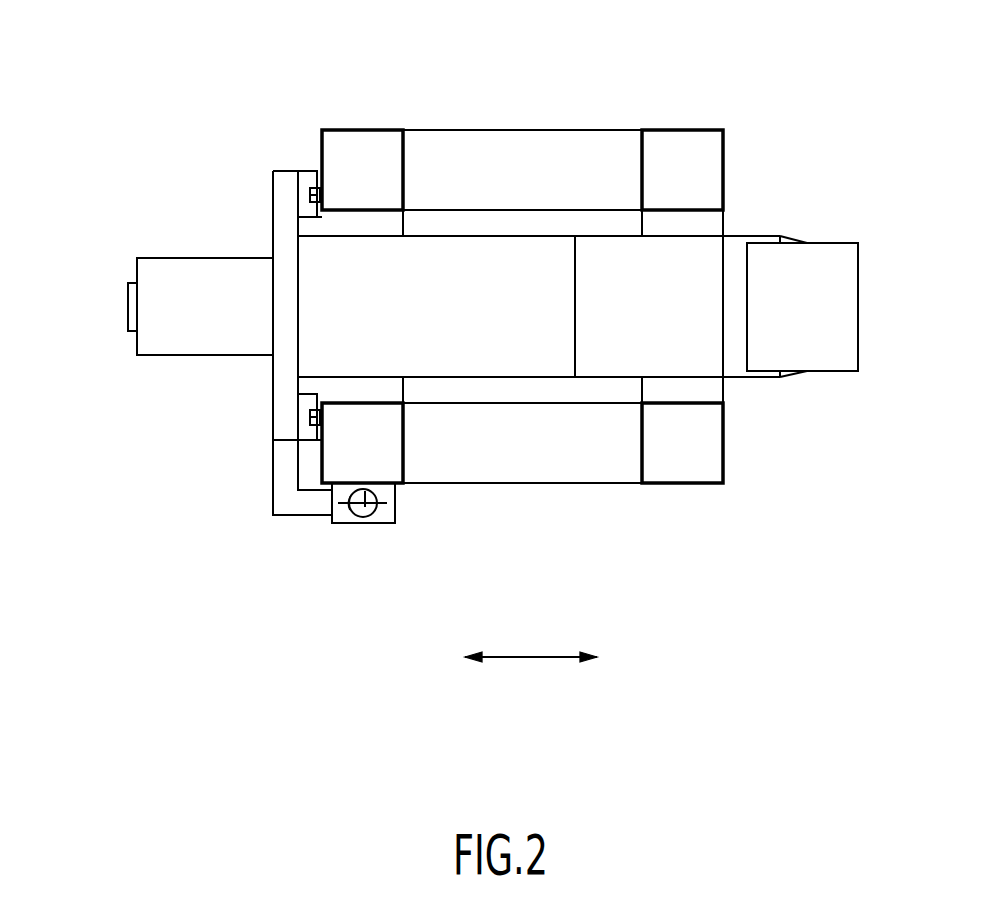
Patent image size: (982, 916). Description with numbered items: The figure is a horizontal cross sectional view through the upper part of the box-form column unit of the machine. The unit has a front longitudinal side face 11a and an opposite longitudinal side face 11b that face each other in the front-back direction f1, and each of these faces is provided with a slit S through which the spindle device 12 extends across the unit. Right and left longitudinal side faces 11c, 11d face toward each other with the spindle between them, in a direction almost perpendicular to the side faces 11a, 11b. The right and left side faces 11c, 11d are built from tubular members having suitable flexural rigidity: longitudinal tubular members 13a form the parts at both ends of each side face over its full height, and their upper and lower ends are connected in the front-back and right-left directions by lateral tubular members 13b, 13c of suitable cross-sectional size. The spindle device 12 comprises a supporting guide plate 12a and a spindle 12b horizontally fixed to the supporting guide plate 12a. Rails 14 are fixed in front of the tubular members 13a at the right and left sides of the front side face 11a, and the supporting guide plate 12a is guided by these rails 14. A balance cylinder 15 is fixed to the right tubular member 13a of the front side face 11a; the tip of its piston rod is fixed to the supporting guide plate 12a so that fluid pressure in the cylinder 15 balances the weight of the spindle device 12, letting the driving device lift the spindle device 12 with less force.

The front longitudinal side face 11a is at (230, 180).
The longitudinal side face 11b is at (763, 170).
The right longitudinal side face 11c is at (502, 112).
The left longitudinal side face 11d is at (602, 497).
The spindle device 12 is at (472, 337).
The supporting guide plate 12a is at (272, 232).
The spindle 12b is at (128, 302).
The longitudinal tubular member 13a is at (368, 130).
The lateral tubular member 13b is at (577, 130).
The lateral tubular member 13c is at (403, 228).
The rail 14 is at (310, 190).
The balance cylinder 15 is at (360, 523).
The slit S is at (312, 385).
The front-back direction f1 is at (545, 657).